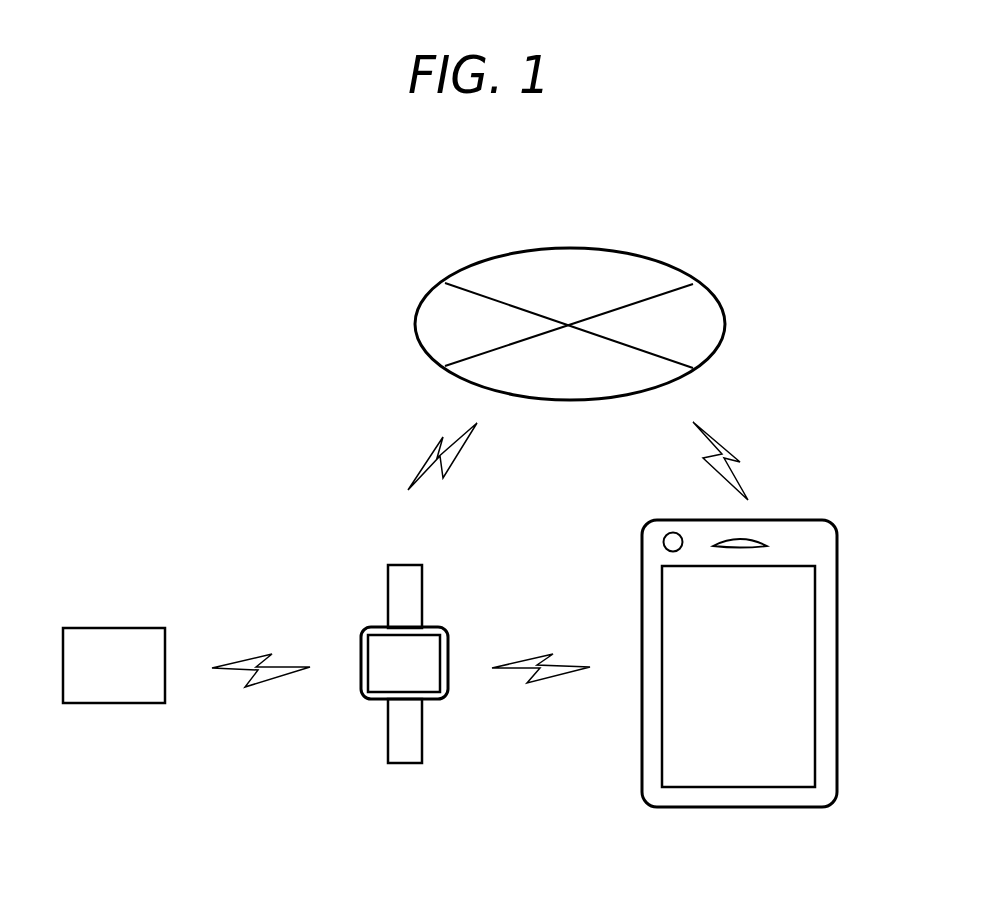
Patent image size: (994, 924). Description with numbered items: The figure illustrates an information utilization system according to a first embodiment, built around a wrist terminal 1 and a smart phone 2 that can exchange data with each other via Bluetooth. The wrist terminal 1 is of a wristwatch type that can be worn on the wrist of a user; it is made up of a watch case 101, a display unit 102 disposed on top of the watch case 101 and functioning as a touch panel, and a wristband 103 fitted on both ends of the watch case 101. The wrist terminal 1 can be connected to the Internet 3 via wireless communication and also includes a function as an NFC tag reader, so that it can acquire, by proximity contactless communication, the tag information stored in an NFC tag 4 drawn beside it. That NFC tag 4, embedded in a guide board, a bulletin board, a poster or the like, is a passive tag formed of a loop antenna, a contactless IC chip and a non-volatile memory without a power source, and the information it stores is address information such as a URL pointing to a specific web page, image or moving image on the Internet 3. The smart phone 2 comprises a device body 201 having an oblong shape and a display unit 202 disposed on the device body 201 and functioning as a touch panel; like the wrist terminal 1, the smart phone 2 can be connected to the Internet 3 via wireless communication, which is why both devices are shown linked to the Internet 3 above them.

The wrist terminal 1 is at (424, 657).
The watch case 101 is at (450, 647).
The display unit 102 is at (425, 678).
The wristband 103 is at (388, 737).
The smart phone 2 is at (778, 631).
The device body 201 is at (837, 603).
The display unit 202 is at (778, 687).
The Internet 3 is at (602, 248).
The NFC tag 4 is at (118, 627).